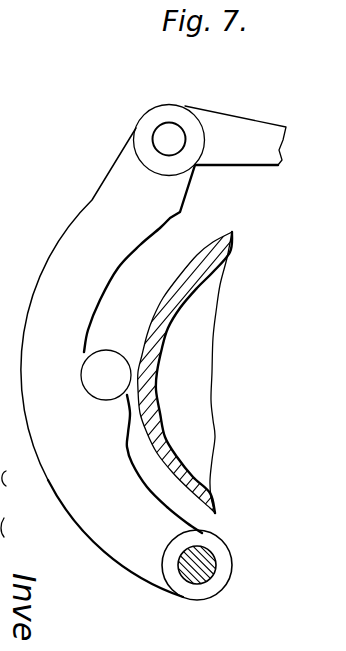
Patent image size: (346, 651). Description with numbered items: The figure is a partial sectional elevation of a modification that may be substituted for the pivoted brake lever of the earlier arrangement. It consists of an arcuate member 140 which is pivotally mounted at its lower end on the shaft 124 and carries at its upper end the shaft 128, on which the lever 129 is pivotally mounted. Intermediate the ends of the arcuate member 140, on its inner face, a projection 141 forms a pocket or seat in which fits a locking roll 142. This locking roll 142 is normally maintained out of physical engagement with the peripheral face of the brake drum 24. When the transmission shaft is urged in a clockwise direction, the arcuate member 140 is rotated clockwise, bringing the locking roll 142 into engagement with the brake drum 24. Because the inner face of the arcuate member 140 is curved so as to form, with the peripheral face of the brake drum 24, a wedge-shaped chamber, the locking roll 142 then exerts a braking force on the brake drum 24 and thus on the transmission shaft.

The brake drum 24 is at (152, 375).
The shaft 124 is at (213, 557).
The shaft 128 is at (166, 137).
The lever 129 is at (260, 132).
The arcuate member 140 is at (107, 537).
The projection 141 is at (123, 417).
The locking roll 142 is at (107, 357).